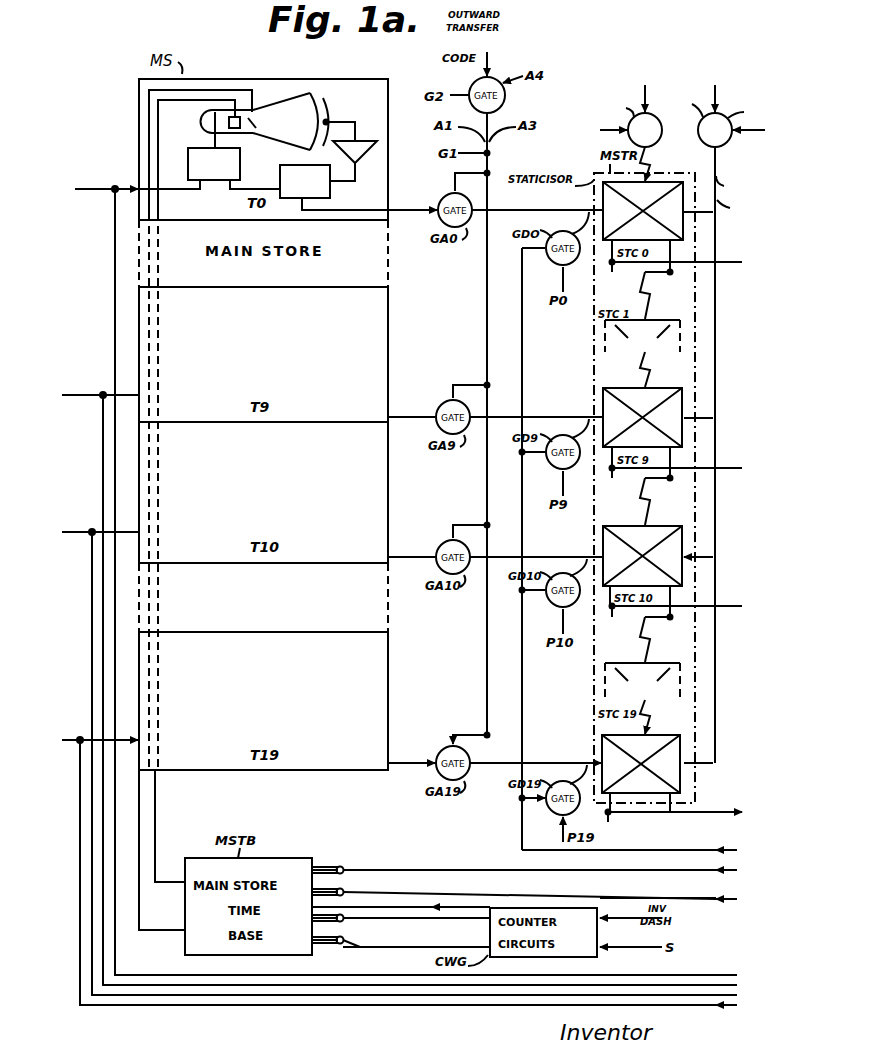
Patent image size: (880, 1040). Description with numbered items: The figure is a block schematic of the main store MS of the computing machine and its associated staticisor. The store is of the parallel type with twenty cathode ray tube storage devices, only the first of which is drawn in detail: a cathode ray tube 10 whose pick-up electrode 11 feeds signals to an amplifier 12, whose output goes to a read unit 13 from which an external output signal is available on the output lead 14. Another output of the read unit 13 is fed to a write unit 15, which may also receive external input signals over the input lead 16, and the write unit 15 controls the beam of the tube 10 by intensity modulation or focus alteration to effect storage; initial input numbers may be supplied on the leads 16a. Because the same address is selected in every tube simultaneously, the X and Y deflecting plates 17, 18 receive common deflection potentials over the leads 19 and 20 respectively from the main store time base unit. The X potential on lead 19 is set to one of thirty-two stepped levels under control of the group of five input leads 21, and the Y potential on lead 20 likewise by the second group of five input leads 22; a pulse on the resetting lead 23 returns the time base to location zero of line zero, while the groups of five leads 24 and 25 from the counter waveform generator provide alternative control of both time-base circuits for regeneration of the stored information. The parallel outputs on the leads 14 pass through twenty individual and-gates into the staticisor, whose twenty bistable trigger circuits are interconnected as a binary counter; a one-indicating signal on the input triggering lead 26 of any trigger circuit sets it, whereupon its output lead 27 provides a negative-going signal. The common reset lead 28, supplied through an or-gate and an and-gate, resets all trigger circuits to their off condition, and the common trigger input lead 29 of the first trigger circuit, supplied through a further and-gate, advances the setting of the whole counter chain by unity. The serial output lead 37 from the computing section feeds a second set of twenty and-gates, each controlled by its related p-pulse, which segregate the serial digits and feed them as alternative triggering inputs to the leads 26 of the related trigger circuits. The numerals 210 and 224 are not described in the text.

The cathode ray tube 10 is at (293, 99).
The pick-up electrode 11 is at (328, 110).
The amplifier 12 is at (360, 140).
The read unit 13 is at (330, 193).
The output lead 14 is at (398, 210).
The write unit 15 is at (220, 181).
The input lead 16 is at (122, 188).
The input leads 16a is at (78, 186).
The X deflecting plates 17 is at (216, 112).
The Y deflecting plates 18 is at (256, 116).
The X-deflection lead 19 is at (156, 819).
The Y-deflection lead 20 is at (150, 900).
The group of five input leads 21 is at (341, 866).
The second group of five input leads 22 is at (345, 888).
The resetting lead 23 is at (404, 906).
The group of five leads 24 is at (345, 922).
The group of five leads 25 is at (345, 945).
The input triggering lead 26 is at (544, 210).
The one output lead 27 is at (740, 262).
The common reset lead 28 is at (712, 163).
The common trigger input lead 29 is at (651, 156).
The output lead 37 is at (682, 850).
The output line 210 is at (648, 872).
The output line 224 is at (688, 902).